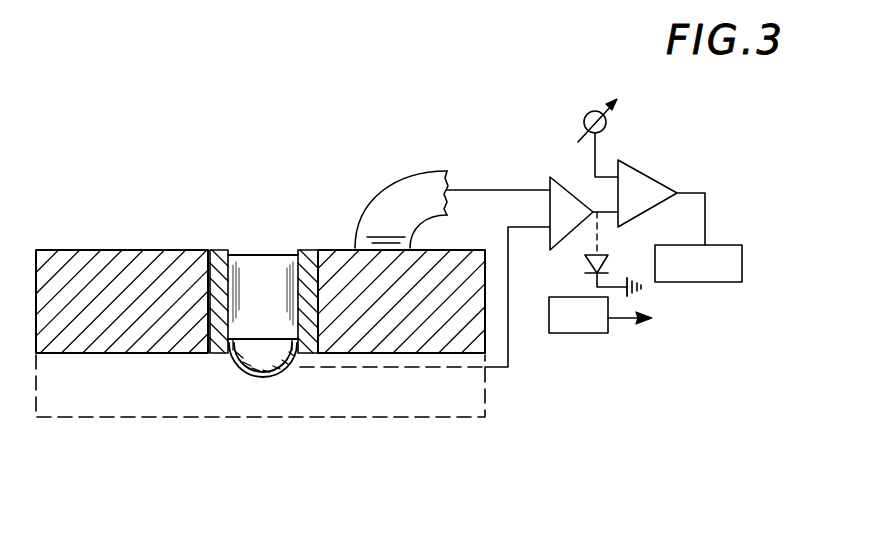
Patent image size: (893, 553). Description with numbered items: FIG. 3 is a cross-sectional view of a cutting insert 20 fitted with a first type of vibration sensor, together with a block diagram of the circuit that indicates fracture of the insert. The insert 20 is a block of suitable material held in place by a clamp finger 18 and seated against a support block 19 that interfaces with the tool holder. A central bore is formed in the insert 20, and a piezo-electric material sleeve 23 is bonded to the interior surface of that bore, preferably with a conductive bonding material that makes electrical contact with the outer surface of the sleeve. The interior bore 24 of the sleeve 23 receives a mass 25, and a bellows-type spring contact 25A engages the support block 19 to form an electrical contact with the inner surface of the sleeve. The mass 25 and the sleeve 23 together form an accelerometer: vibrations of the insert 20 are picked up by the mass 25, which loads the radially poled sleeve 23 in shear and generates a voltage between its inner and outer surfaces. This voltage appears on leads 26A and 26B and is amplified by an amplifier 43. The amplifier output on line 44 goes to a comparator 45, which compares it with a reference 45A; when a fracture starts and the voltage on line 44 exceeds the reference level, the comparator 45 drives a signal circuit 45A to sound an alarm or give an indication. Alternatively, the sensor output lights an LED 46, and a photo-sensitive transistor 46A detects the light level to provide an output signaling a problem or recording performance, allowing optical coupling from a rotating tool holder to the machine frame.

The clamp finger 18 is at (380, 200).
The support block 19 is at (100, 418).
The cutting insert 20 is at (60, 257).
The piezo-electric material sleeve 23 is at (220, 250).
The interior bore of the sleeve 24 is at (237, 255).
The mass 25 is at (270, 270).
The spring contact 25A is at (280, 365).
The lead 26A is at (492, 148).
The lead 26B is at (510, 343).
The amplifier 43 is at (550, 186).
The line 44 is at (600, 208).
The comparator 45 is at (633, 180).
The reference and signal circuit 45A is at (593, 112).
The LED 46 is at (587, 271).
The photo-sensitive transistor 46A is at (588, 334).